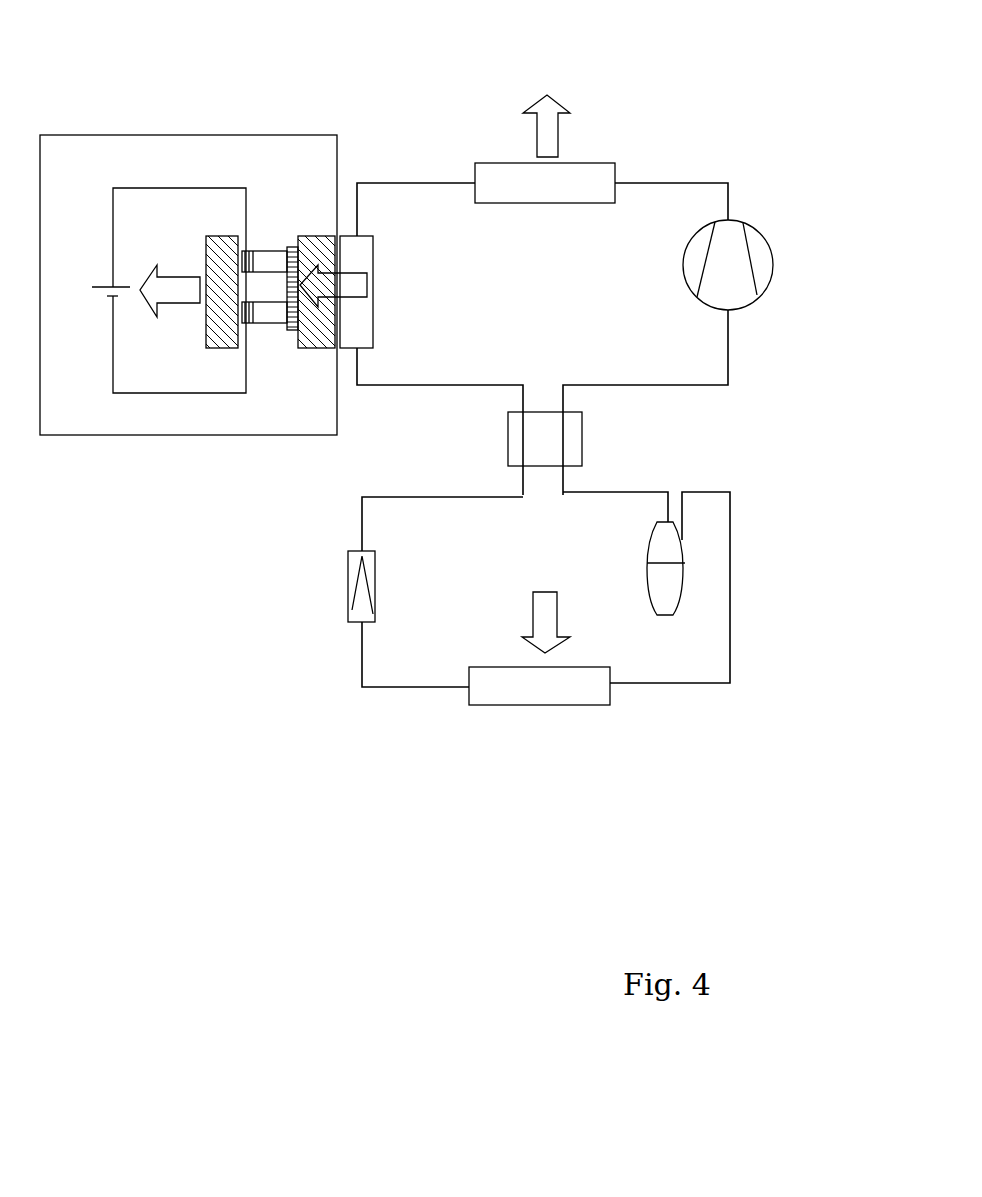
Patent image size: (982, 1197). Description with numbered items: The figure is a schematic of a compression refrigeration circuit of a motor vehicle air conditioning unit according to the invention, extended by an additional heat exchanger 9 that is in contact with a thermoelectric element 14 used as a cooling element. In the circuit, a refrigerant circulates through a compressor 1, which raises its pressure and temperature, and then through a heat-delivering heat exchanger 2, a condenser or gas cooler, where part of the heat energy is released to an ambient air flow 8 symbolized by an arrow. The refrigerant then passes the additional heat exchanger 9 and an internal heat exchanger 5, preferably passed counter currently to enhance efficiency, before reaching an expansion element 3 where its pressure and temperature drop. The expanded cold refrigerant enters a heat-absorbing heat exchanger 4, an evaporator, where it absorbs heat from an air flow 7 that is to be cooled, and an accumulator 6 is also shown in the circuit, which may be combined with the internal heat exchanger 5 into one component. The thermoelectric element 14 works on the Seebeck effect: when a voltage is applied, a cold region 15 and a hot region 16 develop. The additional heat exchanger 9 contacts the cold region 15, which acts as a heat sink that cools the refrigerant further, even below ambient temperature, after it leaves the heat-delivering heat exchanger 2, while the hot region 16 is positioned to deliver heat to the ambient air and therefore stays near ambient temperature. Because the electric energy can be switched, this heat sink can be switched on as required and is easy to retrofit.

The compressor 1 is at (762, 255).
The heat-delivering heat exchanger 2 is at (592, 177).
The expansion element 3 is at (362, 607).
The heat-absorbing heat exchanger 4 is at (557, 685).
The internal heat exchanger 5 is at (573, 440).
The accumulator 6 is at (668, 580).
The air flow 7 is at (545, 623).
The ambient air flow 8 is at (543, 117).
The additional heat exchanger 9 is at (363, 258).
The thermoelectric element 14 is at (186, 162).
The cold region 15 is at (313, 343).
The hot region 16 is at (223, 347).